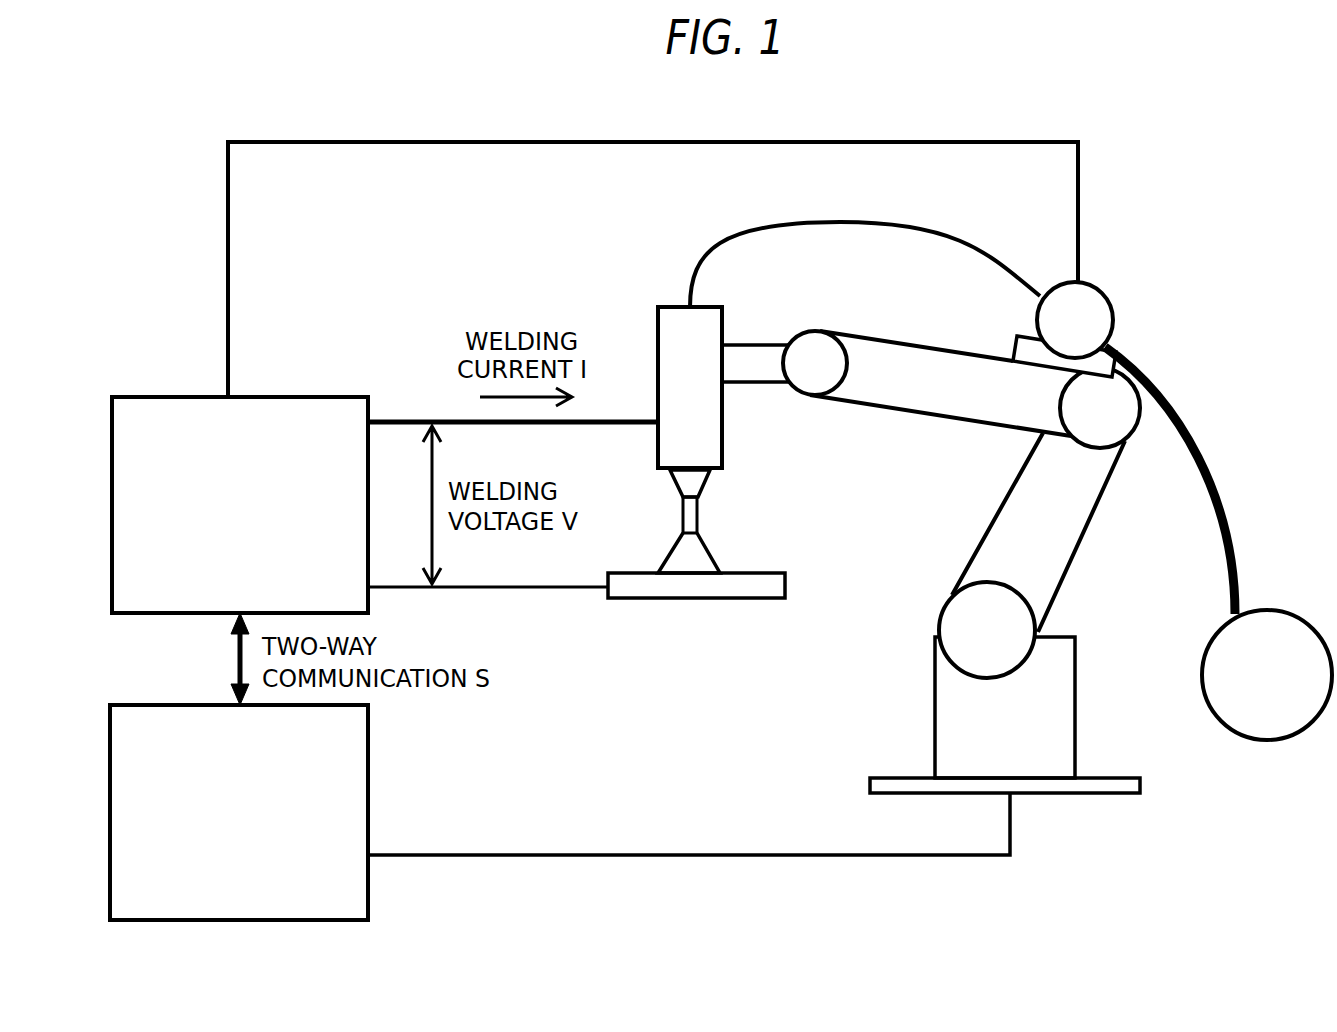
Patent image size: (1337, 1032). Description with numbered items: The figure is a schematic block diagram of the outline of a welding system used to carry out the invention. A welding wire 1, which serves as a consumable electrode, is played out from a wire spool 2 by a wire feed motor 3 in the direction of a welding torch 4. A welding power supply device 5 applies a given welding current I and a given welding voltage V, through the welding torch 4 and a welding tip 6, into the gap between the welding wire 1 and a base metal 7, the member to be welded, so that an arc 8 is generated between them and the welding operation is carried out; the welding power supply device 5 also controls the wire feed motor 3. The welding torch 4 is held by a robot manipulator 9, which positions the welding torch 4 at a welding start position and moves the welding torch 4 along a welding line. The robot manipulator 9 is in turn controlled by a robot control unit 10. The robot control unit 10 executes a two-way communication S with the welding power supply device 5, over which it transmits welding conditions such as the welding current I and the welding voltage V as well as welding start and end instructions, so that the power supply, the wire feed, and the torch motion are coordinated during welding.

The welding wire 1 is at (697, 522).
The wire spool 2 is at (1262, 745).
The wire feed motor 3 is at (1090, 282).
The welding torch 4 is at (657, 333).
The welding power supply device 5 is at (292, 397).
The welding tip 6 is at (708, 485).
The base metal 7 is at (657, 600).
The arc 8 is at (718, 560).
The robot manipulator 9 is at (933, 628).
The robot control unit 10 is at (368, 783).